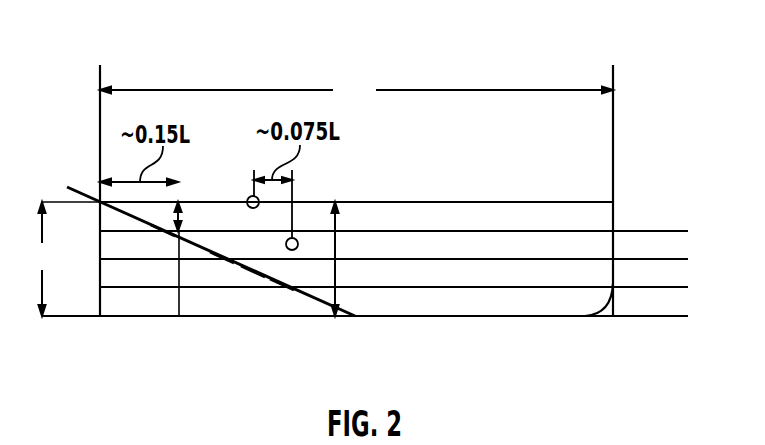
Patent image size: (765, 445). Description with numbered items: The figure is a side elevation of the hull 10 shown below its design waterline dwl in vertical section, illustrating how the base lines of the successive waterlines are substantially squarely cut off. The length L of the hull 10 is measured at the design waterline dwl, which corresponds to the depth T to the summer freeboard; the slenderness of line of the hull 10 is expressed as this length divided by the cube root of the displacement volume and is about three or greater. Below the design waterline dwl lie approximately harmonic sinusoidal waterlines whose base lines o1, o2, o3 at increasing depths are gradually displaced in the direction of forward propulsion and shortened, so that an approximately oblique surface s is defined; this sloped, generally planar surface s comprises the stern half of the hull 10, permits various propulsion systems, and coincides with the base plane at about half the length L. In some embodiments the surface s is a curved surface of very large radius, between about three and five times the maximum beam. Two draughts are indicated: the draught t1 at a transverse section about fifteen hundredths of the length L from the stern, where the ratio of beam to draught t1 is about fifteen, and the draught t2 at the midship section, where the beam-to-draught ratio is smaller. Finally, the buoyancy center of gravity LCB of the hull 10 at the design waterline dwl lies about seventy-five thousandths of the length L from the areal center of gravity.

The hull 10 is at (613, 198).
The length of the hull L is at (356, 88).
The depth to the summer freeboard T is at (42, 259).
The draught of the hull at the forward section t1 is at (183, 212).
The draught of the hull at the midship section t2 is at (335, 242).
The buoyancy center of gravity LCB is at (262, 216).
The design waterline dwl is at (356, 247).
The base line of first waterline o1 is at (163, 233).
The base line of second waterline o2 is at (222, 258).
The oblique surface s is at (253, 272).
The base line of third waterline o3 is at (282, 287).